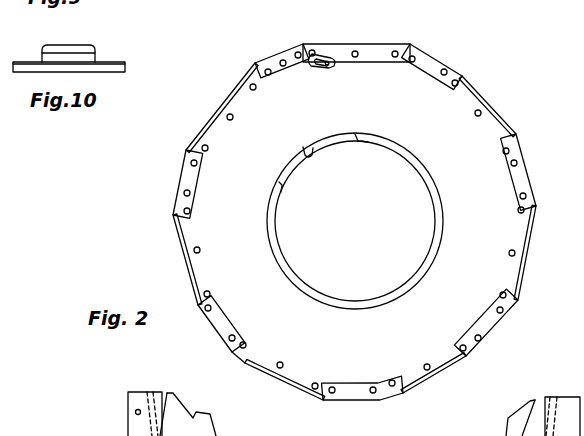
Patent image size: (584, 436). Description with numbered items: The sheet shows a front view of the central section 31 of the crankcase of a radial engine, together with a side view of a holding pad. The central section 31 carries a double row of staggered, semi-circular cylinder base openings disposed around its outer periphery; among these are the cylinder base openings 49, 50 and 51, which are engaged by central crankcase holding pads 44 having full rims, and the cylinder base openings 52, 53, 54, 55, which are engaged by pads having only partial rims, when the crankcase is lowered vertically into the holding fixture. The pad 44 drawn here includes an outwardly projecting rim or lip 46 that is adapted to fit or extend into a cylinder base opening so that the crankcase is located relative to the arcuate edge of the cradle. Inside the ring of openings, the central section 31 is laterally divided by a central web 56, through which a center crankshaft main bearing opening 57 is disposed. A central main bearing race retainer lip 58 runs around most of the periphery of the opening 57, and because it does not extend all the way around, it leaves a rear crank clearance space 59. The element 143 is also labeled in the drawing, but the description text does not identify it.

In FIG. 2, the central section of the crankcase 31 is at (351, 240).
In FIG. 10, the central crankcase holding pad 44 is at (107, 65).
In FIG. 10, the outwardly projecting rim or lip 46 is at (83, 55).
In FIG. 2, the cylinder base opening 49 is at (407, 393).
In FIG. 2, the cylinder base opening 50 is at (433, 375).
In FIG. 2, the cylinder base opening 51 is at (282, 383).
In FIG. 2, the cylinder base opening 52 is at (522, 297).
In FIG. 2, the cylinder base opening 53 is at (524, 257).
In FIG. 2, the cylinder base opening 54 is at (187, 300).
In FIG. 2, the cylinder base opening 55 is at (188, 255).
In FIG. 2, the central web 56 is at (223, 220).
In FIG. 2, the center crankshaft main bearing opening 57 is at (340, 150).
In FIG. 2, the central main bearing race retainer lip 58 is at (358, 137).
In FIG. 2, the rear crank clearance space 59 is at (305, 148).
In FIG. 2, the bracket block 143 is at (136, 411).